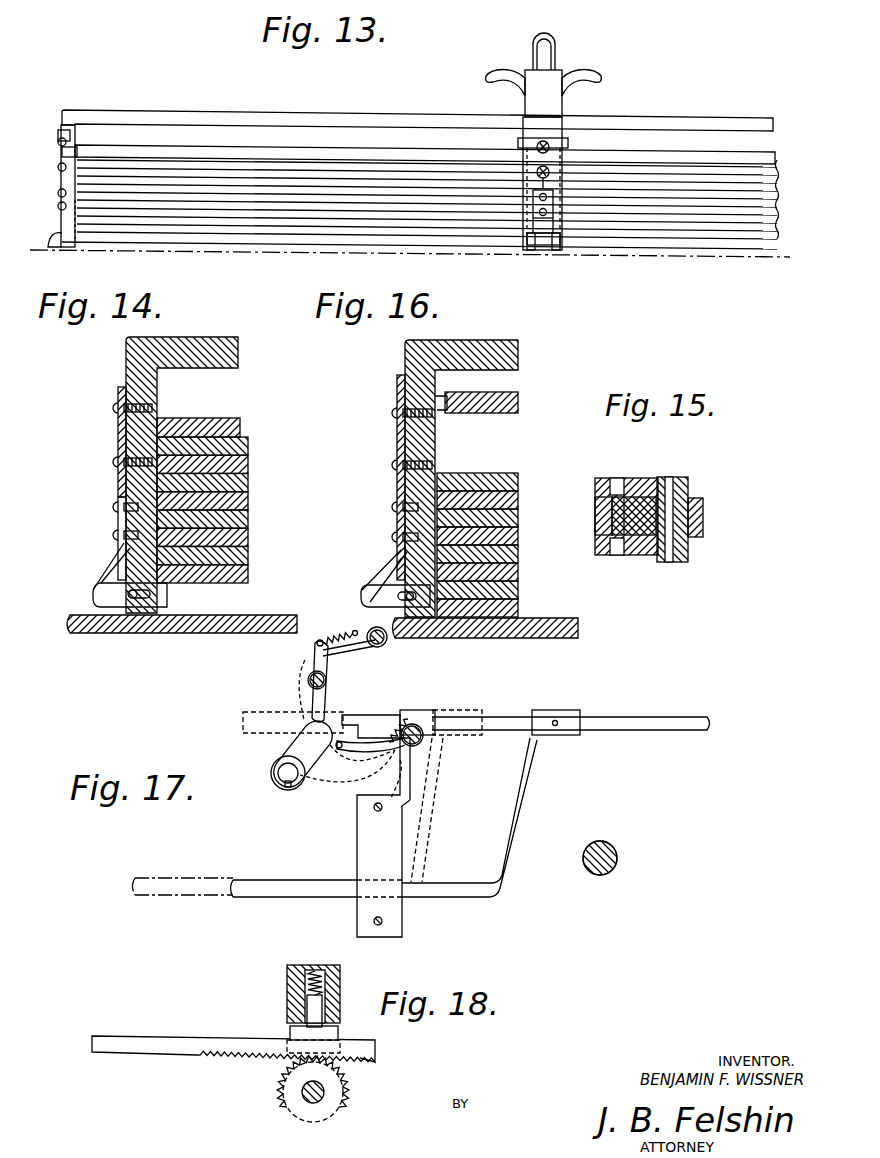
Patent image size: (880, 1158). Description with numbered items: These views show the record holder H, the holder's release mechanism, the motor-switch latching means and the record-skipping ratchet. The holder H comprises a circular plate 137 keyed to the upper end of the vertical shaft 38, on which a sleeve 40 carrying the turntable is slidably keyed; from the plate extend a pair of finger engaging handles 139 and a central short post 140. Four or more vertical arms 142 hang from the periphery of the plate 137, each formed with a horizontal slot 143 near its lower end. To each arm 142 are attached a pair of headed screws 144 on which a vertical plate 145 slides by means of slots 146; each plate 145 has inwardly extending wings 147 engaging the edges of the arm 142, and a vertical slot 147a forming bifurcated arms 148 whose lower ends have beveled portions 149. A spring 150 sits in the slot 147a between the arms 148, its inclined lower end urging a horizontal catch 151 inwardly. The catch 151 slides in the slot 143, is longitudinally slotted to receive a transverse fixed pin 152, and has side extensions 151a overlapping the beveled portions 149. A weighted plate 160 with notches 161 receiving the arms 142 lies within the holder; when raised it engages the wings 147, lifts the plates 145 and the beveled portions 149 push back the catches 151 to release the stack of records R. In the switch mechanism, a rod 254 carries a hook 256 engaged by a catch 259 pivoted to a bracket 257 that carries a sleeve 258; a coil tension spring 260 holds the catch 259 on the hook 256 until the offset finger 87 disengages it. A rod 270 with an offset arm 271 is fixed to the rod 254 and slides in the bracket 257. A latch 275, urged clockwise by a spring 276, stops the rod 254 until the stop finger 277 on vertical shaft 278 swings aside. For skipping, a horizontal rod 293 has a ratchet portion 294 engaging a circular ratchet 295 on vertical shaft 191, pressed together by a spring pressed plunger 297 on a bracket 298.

In FIG. 13, the circular plate 137 is at (351, 116).
In FIG. 16, the circular plate 137 is at (461, 467).
In FIG. 13, the holder H is at (206, 94).
In FIG. 14, the holder H is at (230, 324).
In FIG. 13, the circular weighted plate 160 is at (251, 158).
In FIG. 16, the circular weighted plate 160 is at (520, 400).
In FIG. 13, the notches 161 is at (78, 152).
In FIG. 16, the notches 161 is at (446, 408).
In FIG. 13, the inwardly extending wings 147 is at (60, 130).
In FIG. 14, the inwardly extending wings 147 is at (125, 370).
In FIG. 16, the inwardly extending wings 147 is at (403, 370).
In FIG. 13, the spring 150 is at (62, 228).
In FIG. 14, the spring 150 is at (121, 545).
In FIG. 13, the short post 140 is at (544, 38).
In FIG. 13, the finger engaging handles 139 is at (600, 62).
In FIG. 13, the vertical arms 142 is at (557, 130).
In FIG. 16, the vertical arms 142 is at (435, 448).
In FIG. 13, the horizontal headed screws 144 is at (537, 148).
In FIG. 14, the horizontal headed screws 144 is at (116, 406).
In FIG. 13, the vertical plate 145 is at (553, 176).
In FIG. 16, the vertical plate 145 is at (398, 438).
In FIG. 13, the slots 146 is at (553, 215).
In FIG. 14, the slots 146 is at (120, 478).
In FIG. 13, the vertical slot 147a is at (532, 222).
In FIG. 13, the bifurcated arms 148 is at (548, 190).
In FIG. 14, the stack of records R is at (250, 470).
In FIG. 14, the horizontal catch 151 is at (165, 595).
In FIG. 16, the horizontal catch 151 is at (430, 600).
In FIG. 15, the horizontal catch 151 is at (650, 558).
In FIG. 15, the side extensions 151a is at (603, 478).
In FIG. 14, the horizontal slot 143 is at (143, 610).
In FIG. 16, the horizontal slot 143 is at (401, 550).
In FIG. 14, the transverse fixed pin 152 is at (130, 600).
In FIG. 16, the transverse fixed pin 152 is at (412, 600).
In FIG. 15, the transverse fixed pin 152 is at (668, 478).
In FIG. 14, the beveled portions 149 is at (97, 600).
In FIG. 16, the beveled portions 149 is at (386, 595).
In FIG. 15, the beveled portions 149 is at (635, 556).
In FIG. 17, the latch 275 is at (303, 672).
In FIG. 17, the spring 276 is at (340, 634).
In FIG. 17, the finger 277 is at (348, 663).
In FIG. 17, the vertical shaft 278 is at (386, 642).
In FIG. 17, the hook 256 is at (373, 715).
In FIG. 17, the coil tension spring 260 is at (405, 718).
In FIG. 17, the sleeve 258 is at (422, 712).
In FIG. 17, the catch 259 is at (387, 752).
In FIG. 17, the offset finger 87 is at (291, 770).
In FIG. 17, the rod 254 is at (672, 717).
In FIG. 17, the bracket 257 is at (357, 850).
In FIG. 17, the rod 270 is at (288, 898).
In FIG. 17, the offset arm 271 is at (517, 808).
In FIG. 17, the vertical shaft 38 is at (600, 841).
In FIG. 17, the sleeve 40 is at (618, 850).
In FIG. 18, the horizontal rod 293 is at (160, 1035).
In FIG. 18, the bracket 298 is at (287, 987).
In FIG. 18, the spring pressed plunger 297 is at (318, 1013).
In FIG. 18, the circular ratchet 295 is at (286, 1086).
In FIG. 18, the ratchet portion 294 is at (352, 1060).
In FIG. 18, the vertical shaft 191 is at (316, 1103).